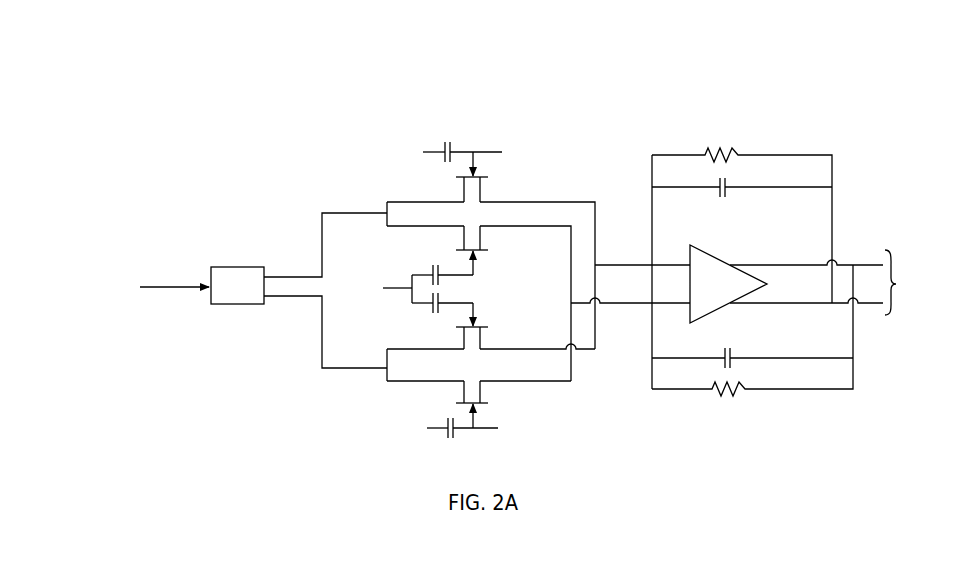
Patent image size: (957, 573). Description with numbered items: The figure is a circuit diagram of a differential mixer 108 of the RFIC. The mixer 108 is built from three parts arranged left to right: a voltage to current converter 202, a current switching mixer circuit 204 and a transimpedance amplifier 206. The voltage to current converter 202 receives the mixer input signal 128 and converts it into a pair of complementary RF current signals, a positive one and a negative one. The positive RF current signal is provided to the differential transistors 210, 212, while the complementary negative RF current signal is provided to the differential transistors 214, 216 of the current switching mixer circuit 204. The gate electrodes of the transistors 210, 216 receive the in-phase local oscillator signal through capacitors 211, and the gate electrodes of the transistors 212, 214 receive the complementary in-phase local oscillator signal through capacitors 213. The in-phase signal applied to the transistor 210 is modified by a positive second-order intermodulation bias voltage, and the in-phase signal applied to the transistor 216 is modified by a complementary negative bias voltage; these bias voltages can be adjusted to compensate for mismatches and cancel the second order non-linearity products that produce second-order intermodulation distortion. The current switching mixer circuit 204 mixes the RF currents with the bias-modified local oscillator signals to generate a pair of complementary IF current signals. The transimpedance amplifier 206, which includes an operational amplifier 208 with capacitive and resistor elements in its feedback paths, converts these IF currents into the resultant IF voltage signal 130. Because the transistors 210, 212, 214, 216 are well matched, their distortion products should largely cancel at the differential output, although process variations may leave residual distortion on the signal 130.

The mixer 108 is at (600, 43).
The mixer input signal 128 is at (153, 287).
The resultant IF voltage signal 130 is at (917, 282).
The voltage to current converter 202 is at (240, 267).
The current switching mixer circuit 204 is at (458, 110).
The transimpedance amplifier 206 is at (746, 113).
The operational amplifier 208 is at (722, 265).
The differential transistor 210 is at (493, 177).
The capacitor 211 is at (443, 143).
The differential transistor 212 is at (493, 250).
The capacitor 213 is at (433, 269).
The differential transistor 214 is at (493, 326).
The differential transistor 216 is at (493, 404).